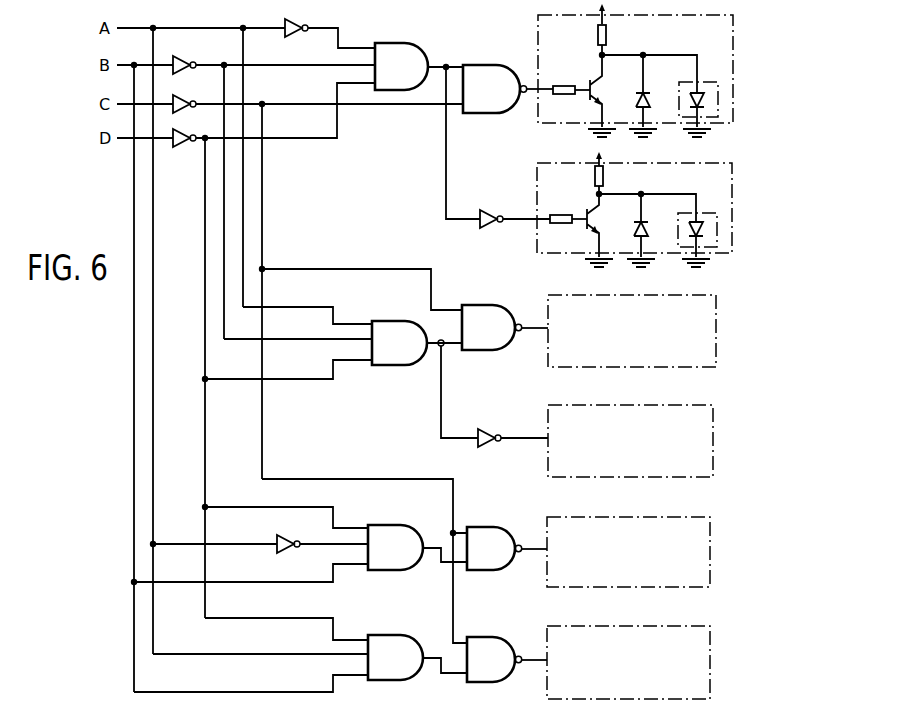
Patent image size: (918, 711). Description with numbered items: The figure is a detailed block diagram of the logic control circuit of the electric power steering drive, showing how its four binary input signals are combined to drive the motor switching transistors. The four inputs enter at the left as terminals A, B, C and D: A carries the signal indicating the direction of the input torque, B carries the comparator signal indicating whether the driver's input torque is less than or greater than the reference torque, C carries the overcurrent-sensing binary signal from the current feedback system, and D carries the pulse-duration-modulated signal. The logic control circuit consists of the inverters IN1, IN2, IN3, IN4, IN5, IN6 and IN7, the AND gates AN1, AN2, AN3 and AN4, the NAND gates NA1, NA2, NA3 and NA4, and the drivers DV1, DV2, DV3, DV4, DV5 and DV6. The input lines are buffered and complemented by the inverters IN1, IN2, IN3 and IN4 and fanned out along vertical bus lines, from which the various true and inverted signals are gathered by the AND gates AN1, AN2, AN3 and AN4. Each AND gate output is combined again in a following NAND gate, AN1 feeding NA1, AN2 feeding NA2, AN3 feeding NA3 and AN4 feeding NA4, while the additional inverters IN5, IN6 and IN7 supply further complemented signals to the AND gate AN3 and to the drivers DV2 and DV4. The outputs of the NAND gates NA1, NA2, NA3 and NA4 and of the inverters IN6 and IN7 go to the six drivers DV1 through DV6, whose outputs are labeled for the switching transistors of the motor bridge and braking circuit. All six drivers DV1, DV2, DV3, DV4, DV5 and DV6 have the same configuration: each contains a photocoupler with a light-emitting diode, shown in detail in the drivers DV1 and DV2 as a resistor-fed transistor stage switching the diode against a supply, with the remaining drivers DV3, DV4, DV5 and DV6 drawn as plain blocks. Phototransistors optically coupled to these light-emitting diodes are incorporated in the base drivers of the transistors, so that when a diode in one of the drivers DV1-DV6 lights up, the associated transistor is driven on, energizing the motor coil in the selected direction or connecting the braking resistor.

The inverter IN1 is at (287, 21).
The inverter IN2 is at (186, 60).
The inverter IN3 is at (186, 100).
The inverter IN4 is at (186, 134).
The inverter IN5 is at (278, 538).
The inverter IN6 is at (512, 209).
The inverter IN7 is at (510, 427).
The AND gate AN1 is at (428, 58).
The AND gate AN2 is at (394, 325).
The AND gate AN3 is at (394, 527).
The AND gate AN4 is at (394, 637).
The NAND gate NA1 is at (490, 66).
The NAND gate NA2 is at (490, 308).
The NAND gate NA3 is at (489, 522).
The NAND gate NA4 is at (489, 634).
The driver DV1 is at (738, 46).
The driver DV2 is at (735, 163).
The driver DV3 is at (718, 297).
The driver DV4 is at (640, 405).
The driver DV5 is at (640, 516).
The driver DV6 is at (633, 625).